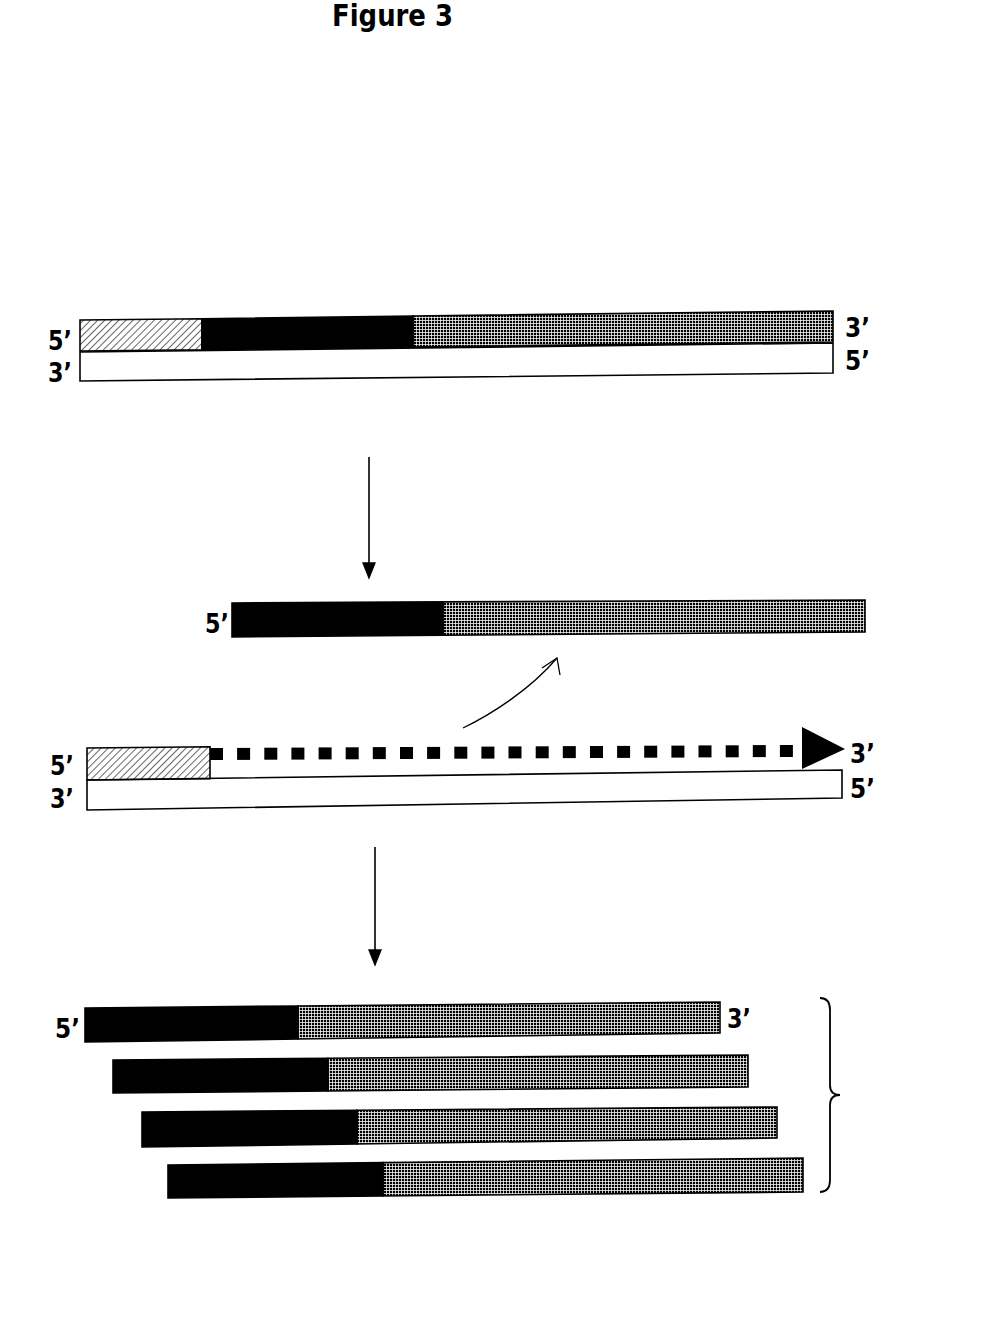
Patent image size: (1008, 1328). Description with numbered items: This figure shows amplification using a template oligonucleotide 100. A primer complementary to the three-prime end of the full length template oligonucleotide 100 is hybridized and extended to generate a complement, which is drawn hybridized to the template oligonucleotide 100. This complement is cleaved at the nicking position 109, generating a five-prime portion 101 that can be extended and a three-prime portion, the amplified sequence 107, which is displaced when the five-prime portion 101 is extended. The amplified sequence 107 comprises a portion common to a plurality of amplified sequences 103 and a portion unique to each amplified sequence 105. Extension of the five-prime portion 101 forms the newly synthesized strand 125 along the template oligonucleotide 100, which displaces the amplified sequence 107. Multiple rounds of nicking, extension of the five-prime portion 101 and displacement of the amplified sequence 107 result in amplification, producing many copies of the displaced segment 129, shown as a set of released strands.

The template oligonucleotide 100 is at (347, 378).
The 5' portion 101 is at (138, 318).
The portion common to a plurality of amplified sequences 103 is at (308, 317).
The portion unique to each amplified sequence 105 is at (624, 312).
The amplified sequence 107 is at (656, 600).
The nicking position 109 is at (199, 278).
The newly synthesized strand 125 is at (624, 745).
The displaced segment 129 is at (487, 1098).